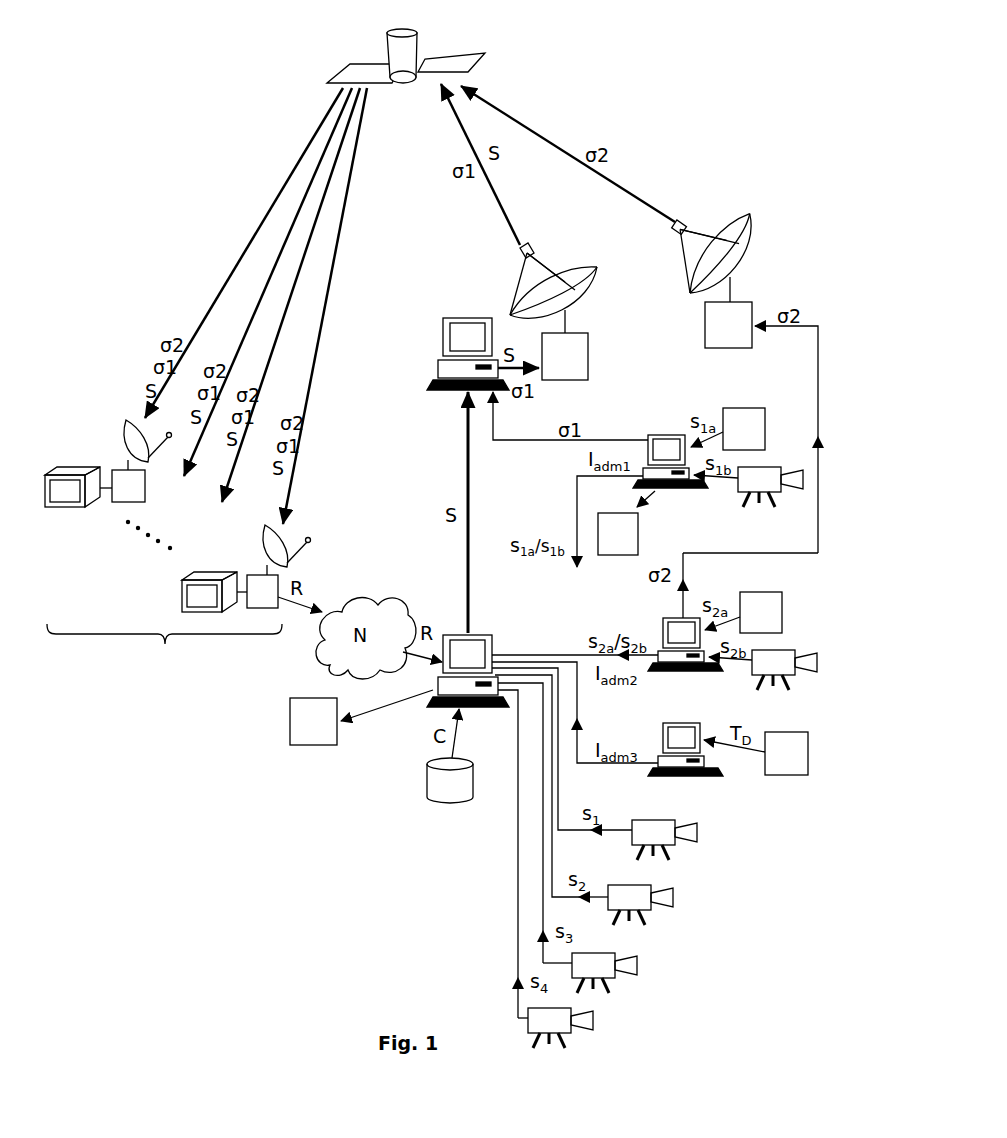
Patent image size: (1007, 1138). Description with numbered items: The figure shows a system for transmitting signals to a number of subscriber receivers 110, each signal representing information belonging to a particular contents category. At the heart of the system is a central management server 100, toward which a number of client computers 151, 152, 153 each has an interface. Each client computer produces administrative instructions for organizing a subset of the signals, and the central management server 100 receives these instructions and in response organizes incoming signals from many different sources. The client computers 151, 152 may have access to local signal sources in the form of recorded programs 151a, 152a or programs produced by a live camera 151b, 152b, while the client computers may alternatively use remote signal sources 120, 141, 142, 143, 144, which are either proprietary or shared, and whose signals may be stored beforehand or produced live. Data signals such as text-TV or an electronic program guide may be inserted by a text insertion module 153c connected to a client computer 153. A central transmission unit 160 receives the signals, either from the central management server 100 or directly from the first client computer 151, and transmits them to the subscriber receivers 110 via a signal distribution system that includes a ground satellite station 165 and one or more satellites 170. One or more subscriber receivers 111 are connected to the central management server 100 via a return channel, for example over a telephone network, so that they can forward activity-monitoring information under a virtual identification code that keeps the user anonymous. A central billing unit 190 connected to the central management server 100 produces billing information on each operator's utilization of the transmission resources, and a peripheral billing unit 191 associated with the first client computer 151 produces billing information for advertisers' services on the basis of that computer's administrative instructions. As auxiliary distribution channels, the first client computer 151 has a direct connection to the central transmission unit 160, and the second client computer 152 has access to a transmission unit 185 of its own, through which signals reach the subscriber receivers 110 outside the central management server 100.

The satellite 170 is at (418, 42).
The central transmission unit 160 is at (467, 318).
The ground satellite station 165 is at (593, 350).
The transmission unit 185 is at (741, 301).
The central management server 100 is at (480, 635).
The central billing unit 190 is at (290, 715).
The remote signal source 120 is at (427, 779).
The subscriber receivers 110 is at (163, 546).
The subscriber receiver 111 is at (183, 590).
The client computer 151 is at (662, 434).
The local signal source 151a is at (733, 407).
The live camera 151b is at (737, 492).
The peripheral billing unit 191 is at (636, 556).
The client computer 152 is at (663, 620).
The local signal source 152a is at (766, 591).
The live camera 152b is at (753, 680).
The client computer 153 is at (663, 732).
The text insertion module 153c is at (785, 776).
The remote signal source 141 is at (642, 819).
The remote signal source 142 is at (660, 889).
The remote signal source 143 is at (639, 961).
The remote signal source 144 is at (594, 1019).